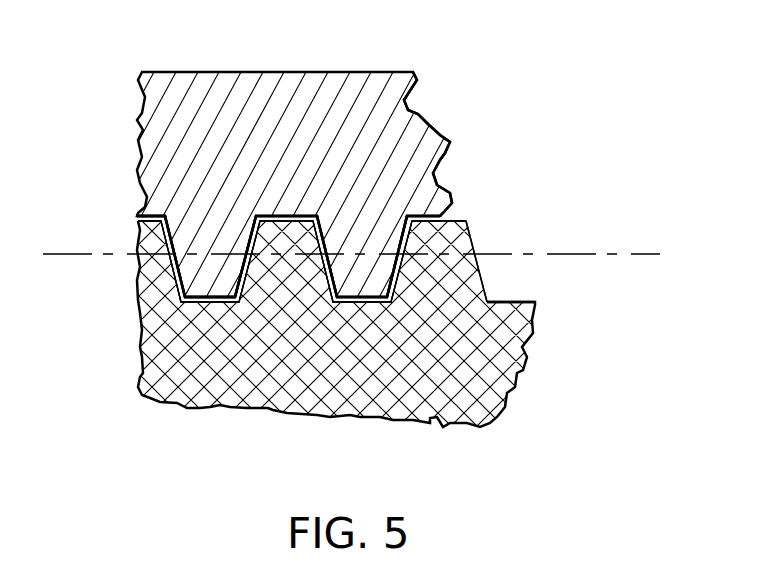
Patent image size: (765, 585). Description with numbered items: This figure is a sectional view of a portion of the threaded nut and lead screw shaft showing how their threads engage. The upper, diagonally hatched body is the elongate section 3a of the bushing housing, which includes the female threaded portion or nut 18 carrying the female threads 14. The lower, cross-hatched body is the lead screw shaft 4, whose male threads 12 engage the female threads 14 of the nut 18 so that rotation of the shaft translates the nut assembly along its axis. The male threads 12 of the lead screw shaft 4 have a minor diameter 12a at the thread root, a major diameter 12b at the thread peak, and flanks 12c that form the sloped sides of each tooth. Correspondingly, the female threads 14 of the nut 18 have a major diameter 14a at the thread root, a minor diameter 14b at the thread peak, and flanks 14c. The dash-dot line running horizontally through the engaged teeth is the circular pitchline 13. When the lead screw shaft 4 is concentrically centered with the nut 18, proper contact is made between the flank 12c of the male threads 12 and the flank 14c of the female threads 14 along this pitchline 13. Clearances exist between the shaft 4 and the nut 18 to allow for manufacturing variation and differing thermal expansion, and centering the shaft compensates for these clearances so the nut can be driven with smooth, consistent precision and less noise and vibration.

The elongate section 3a is at (360, 70).
The lead screw shaft 4 is at (430, 418).
The male threads 12 is at (477, 255).
The minor diameter 12a is at (516, 302).
The major diameter 12b is at (462, 217).
The flank 12c is at (312, 261).
The circular pitchline 13 is at (645, 252).
The female threads 14 is at (172, 214).
The major diameter 14a is at (146, 212).
The minor diameter 14b is at (203, 290).
The flank 14c is at (288, 256).
The female threaded portion or nut 18 is at (440, 155).